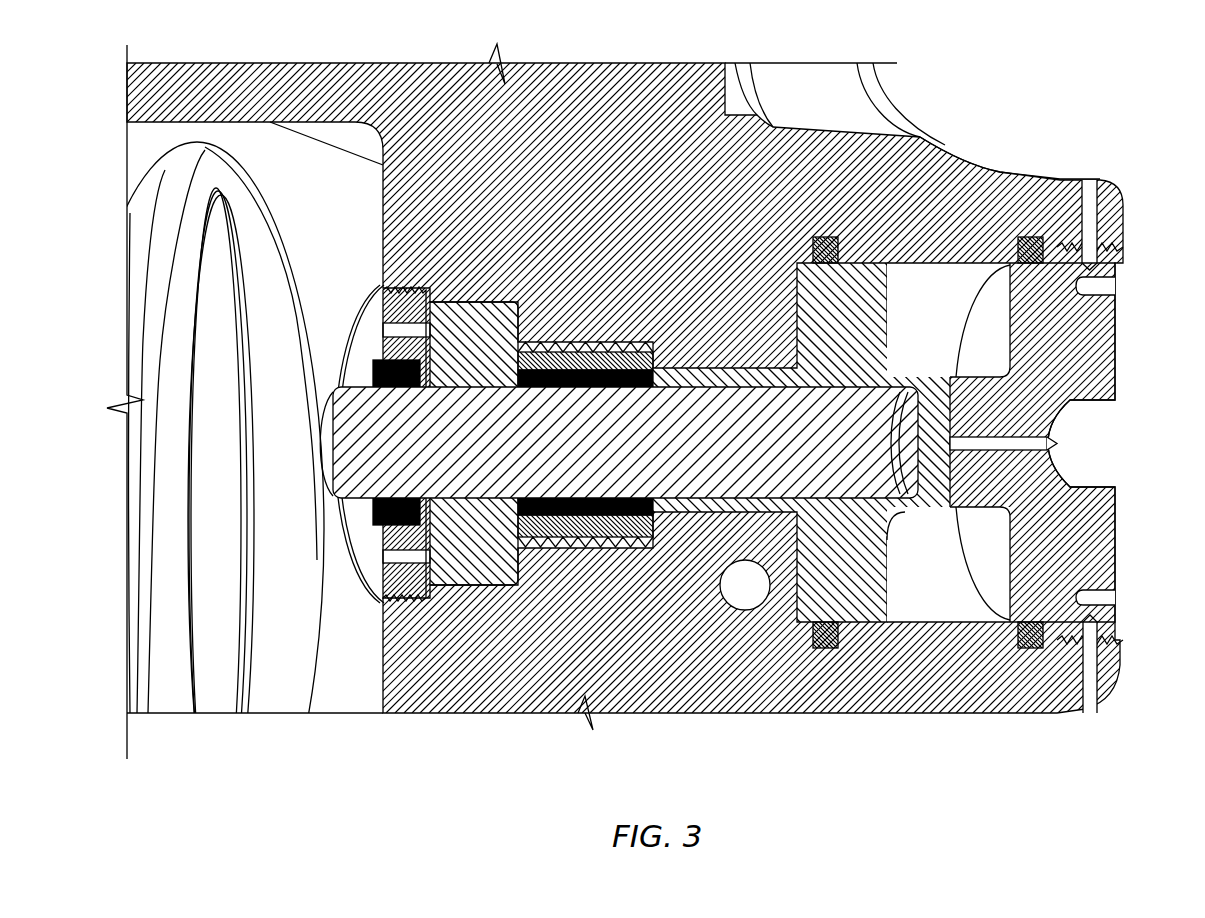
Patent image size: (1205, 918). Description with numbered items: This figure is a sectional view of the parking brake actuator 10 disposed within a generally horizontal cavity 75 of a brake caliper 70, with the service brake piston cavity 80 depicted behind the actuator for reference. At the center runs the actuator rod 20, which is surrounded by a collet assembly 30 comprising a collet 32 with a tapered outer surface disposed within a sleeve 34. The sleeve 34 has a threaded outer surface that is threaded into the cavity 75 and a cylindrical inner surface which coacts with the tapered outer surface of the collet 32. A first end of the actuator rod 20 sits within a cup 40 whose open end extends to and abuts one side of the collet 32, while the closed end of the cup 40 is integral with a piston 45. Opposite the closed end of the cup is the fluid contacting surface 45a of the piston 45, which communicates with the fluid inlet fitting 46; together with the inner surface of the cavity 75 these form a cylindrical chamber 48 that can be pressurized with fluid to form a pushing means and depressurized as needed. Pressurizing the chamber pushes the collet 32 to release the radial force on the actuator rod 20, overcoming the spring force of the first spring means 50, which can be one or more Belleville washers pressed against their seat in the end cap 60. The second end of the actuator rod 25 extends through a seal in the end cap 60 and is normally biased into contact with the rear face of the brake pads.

The parking brake actuator 10 is at (652, 183).
The actuator rod 20 is at (604, 452).
The second end of the actuator rod 25 is at (313, 458).
The collet assembly 30 is at (591, 431).
The collet 32 is at (655, 515).
The sleeve 34 is at (653, 345).
The cup 40 is at (733, 368).
The piston 45 is at (862, 270).
The fluid contacting surface 45a is at (895, 540).
The fluid inlet fitting 46 is at (1105, 535).
The cylindrical chamber 48 is at (942, 265).
The first spring means 50 is at (470, 302).
The end cap 60 is at (400, 289).
The brake caliper 70 is at (1033, 190).
The cavity 75 is at (517, 580).
The service brake piston cavity 80 is at (282, 422).